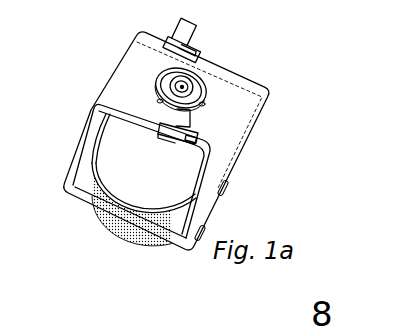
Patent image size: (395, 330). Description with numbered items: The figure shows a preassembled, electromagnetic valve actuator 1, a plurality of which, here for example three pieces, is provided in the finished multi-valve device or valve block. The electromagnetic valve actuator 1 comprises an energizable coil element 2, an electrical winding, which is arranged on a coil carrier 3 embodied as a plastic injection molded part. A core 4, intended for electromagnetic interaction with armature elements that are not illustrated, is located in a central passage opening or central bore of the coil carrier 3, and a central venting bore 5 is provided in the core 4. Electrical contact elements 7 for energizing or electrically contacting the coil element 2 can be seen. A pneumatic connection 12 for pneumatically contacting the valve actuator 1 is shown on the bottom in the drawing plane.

The electromagnetic valve actuator 1 is at (281, 80).
The coil element 2 is at (148, 182).
The coil carrier 3 is at (107, 190).
The core 4 is at (168, 73).
The central venting bore 5 is at (180, 87).
The electrical contact elements 7 is at (189, 33).
The pneumatic connection 12 is at (145, 240).